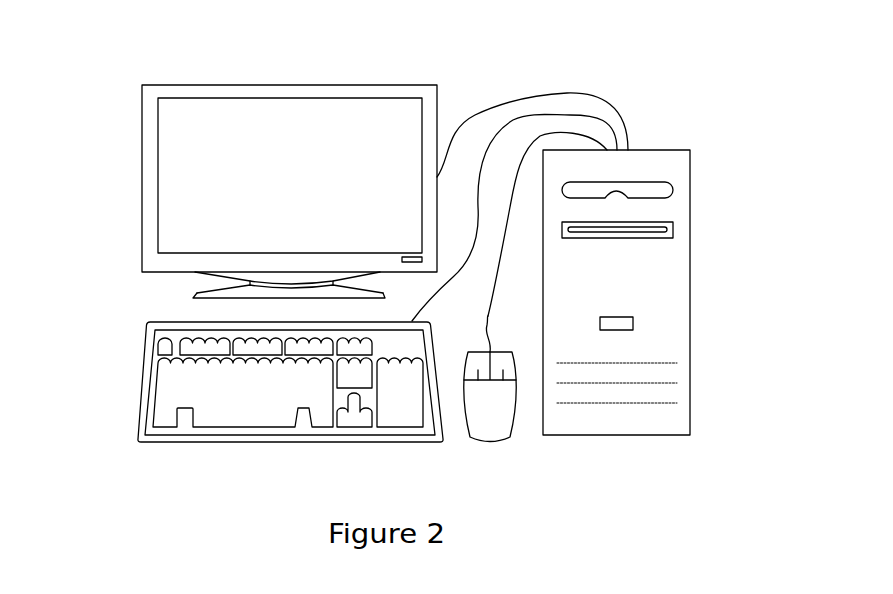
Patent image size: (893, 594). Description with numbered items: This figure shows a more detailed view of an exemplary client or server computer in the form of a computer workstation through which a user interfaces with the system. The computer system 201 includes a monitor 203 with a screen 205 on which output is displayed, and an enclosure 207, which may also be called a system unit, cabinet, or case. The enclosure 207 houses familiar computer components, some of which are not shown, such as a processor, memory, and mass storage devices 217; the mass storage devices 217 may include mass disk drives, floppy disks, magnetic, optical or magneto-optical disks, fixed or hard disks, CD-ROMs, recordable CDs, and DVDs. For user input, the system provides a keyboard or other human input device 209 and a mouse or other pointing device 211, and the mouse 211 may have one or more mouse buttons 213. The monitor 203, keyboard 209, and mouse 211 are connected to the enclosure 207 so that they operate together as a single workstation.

The computer system 201 is at (470, 53).
The monitor 203 is at (283, 85).
The screen 205 is at (178, 175).
The enclosure 207 is at (690, 317).
The keyboard or other human input device 209 is at (143, 373).
The mouse or other pointing device 211 is at (477, 427).
The mouse buttons 213 is at (478, 370).
The mass storage devices 217 is at (667, 181).